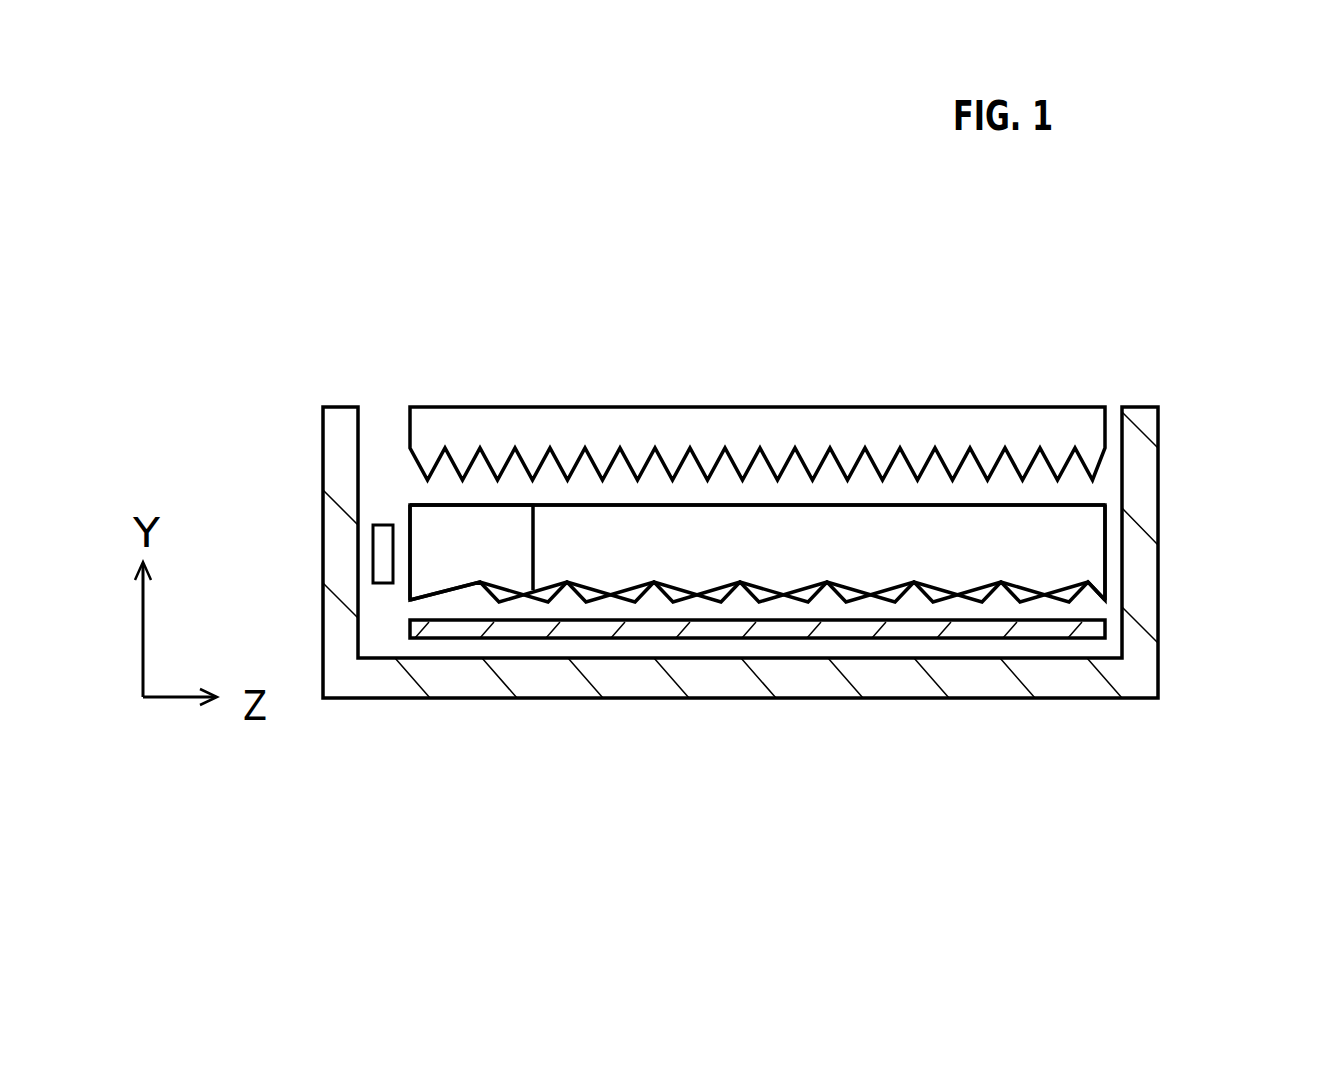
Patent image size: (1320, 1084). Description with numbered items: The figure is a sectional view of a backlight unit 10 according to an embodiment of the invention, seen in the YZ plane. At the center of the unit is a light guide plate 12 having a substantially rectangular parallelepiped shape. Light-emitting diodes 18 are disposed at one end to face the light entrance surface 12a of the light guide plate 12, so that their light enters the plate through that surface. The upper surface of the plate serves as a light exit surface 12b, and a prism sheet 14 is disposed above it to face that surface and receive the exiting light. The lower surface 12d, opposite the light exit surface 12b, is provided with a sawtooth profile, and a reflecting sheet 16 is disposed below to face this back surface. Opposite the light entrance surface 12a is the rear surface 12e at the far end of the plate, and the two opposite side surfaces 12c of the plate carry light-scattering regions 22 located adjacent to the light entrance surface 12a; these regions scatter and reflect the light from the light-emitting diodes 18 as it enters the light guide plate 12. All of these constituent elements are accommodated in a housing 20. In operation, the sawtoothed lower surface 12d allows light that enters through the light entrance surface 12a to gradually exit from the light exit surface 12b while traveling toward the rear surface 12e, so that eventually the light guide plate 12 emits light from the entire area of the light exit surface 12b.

The backlight unit 10 is at (590, 378).
The light guide plate 12 is at (1067, 553).
The light entrance surface 12a is at (408, 515).
The light exit surface 12b is at (822, 507).
The side surfaces 12c is at (670, 543).
The lower surface 12d is at (713, 593).
The rear surface 12e is at (1108, 532).
The prism sheet 14 is at (705, 433).
The reflecting sheet 16 is at (1023, 630).
The light-emitting diodes 18 is at (384, 568).
The housing 20 is at (968, 677).
The light-scattering regions 22 is at (448, 568).